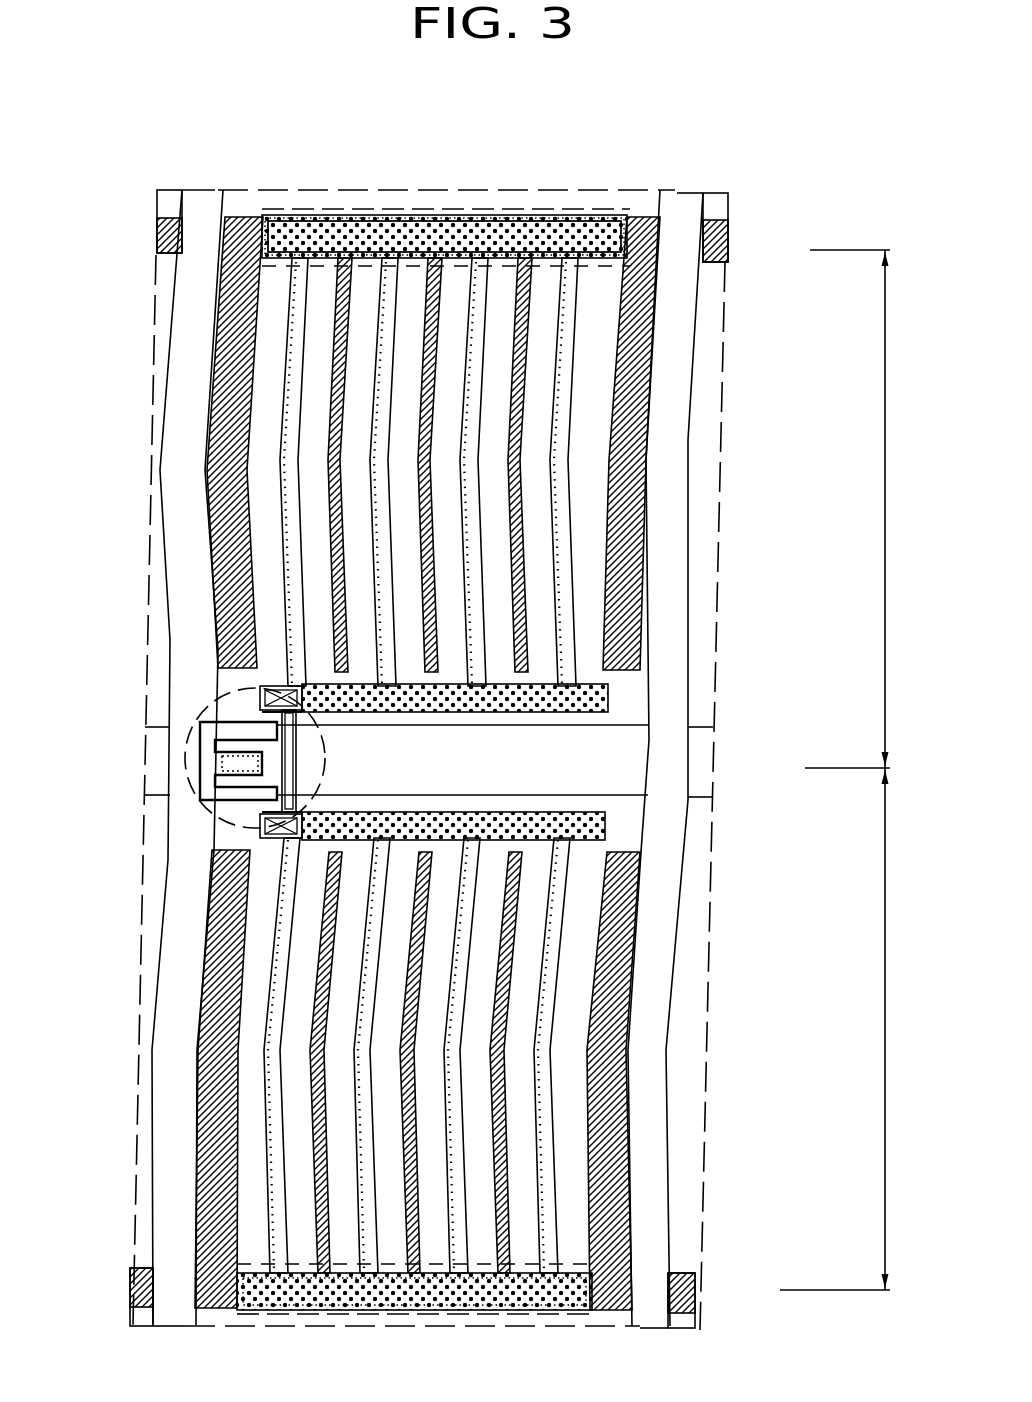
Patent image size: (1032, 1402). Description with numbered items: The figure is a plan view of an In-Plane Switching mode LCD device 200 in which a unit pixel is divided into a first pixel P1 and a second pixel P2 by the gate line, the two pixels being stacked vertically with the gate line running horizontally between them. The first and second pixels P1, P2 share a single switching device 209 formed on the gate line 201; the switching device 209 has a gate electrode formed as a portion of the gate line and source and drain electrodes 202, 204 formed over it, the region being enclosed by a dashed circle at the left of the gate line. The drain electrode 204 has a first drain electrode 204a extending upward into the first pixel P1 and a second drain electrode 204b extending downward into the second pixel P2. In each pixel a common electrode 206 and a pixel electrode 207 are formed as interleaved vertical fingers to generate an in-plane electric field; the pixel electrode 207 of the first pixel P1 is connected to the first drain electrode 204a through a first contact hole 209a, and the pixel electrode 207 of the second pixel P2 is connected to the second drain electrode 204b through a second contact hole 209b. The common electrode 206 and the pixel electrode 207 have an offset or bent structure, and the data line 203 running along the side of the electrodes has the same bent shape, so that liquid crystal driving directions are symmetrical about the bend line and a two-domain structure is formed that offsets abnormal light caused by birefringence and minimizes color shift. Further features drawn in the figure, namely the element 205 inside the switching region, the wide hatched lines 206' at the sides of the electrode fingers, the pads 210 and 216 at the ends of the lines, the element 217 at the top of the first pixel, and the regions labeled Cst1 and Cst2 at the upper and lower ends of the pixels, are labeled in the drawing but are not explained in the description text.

The LCD device 200 is at (115, 158).
The gate line 201 is at (697, 746).
The source electrode 202 is at (200, 727).
The data line 203 is at (187, 453).
The drain electrode 204 is at (200, 770).
The first drain electrode 204a is at (275, 718).
The second drain electrode 204b is at (272, 816).
The active layer 205 is at (222, 762).
The common electrode 206 is at (421, 687).
The common line 206' is at (449, 763).
The pixel electrode 207 is at (388, 285).
The switching device 209 is at (336, 768).
The first contact hole 209a is at (268, 695).
The second contact hole 209b is at (258, 840).
The pad 210 is at (730, 200).
The pad metal 216 is at (728, 238).
The storage electrode 217 is at (527, 258).
The first storage capacitor Cst1 is at (472, 215).
The second storage capacitor Cst2 is at (573, 1262).
The first pixel P1 is at (859, 509).
The second pixel P2 is at (839, 1029).